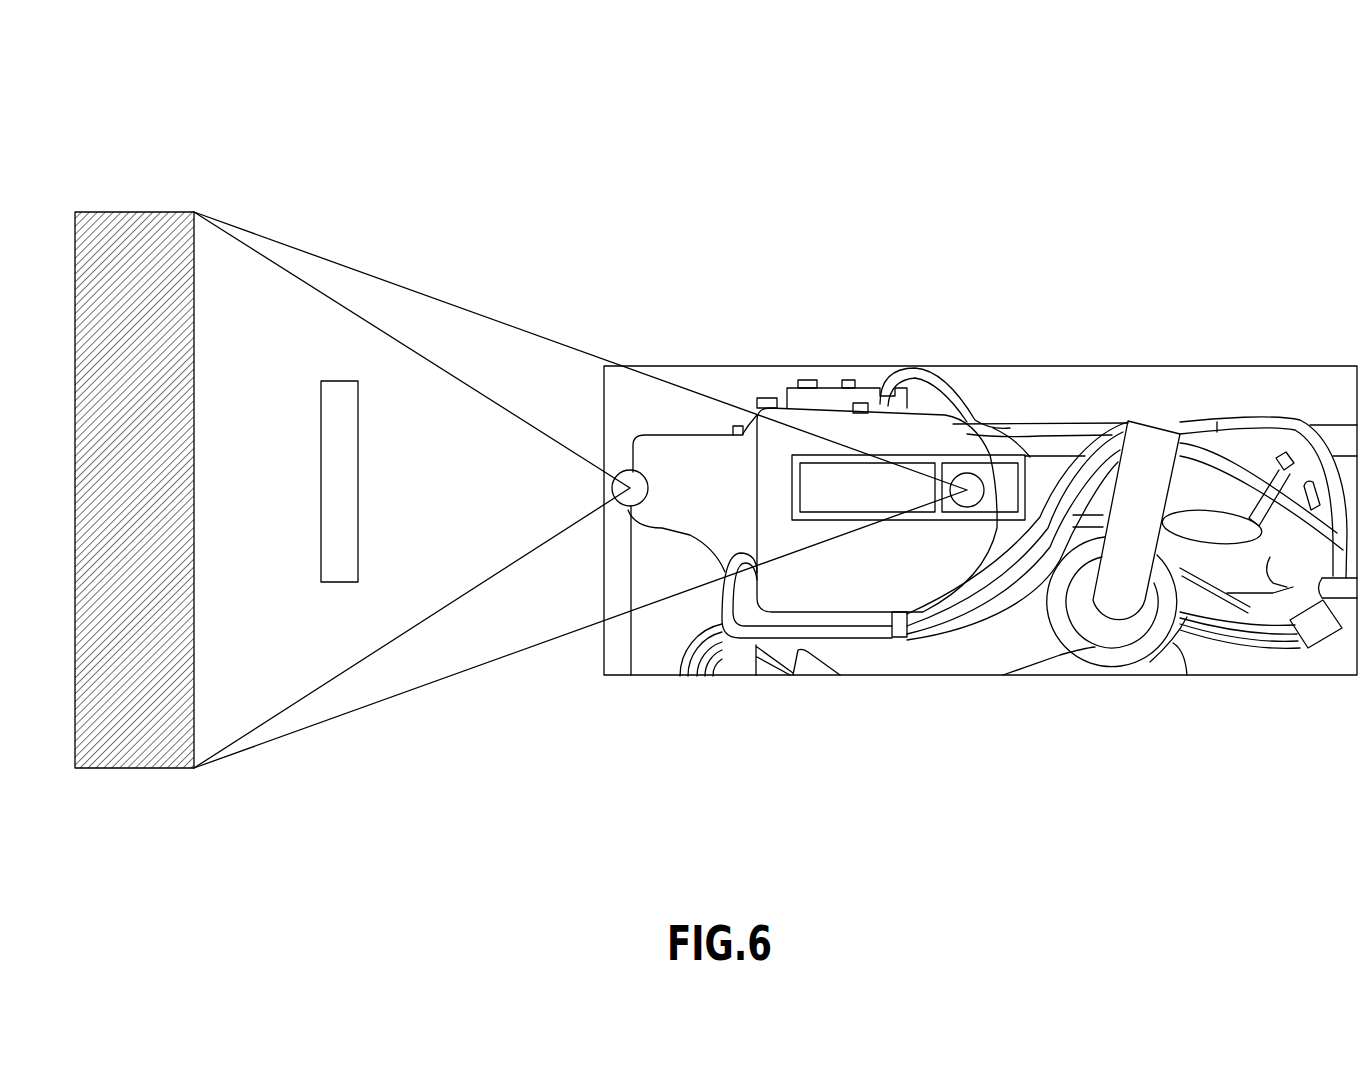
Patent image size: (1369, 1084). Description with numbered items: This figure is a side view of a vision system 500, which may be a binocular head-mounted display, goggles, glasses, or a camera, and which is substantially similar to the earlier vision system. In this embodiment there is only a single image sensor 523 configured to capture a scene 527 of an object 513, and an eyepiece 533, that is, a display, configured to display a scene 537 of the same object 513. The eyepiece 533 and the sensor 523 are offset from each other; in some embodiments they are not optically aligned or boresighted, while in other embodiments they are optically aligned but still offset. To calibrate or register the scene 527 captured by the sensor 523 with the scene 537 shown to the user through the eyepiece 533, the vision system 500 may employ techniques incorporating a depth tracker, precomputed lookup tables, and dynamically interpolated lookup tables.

The vision system 500 is at (134, 72).
The object 513 is at (130, 210).
The image sensor 523 is at (635, 478).
The eyepiece 533 is at (965, 478).
The scene 527 is at (293, 680).
The scene 537 is at (450, 660).